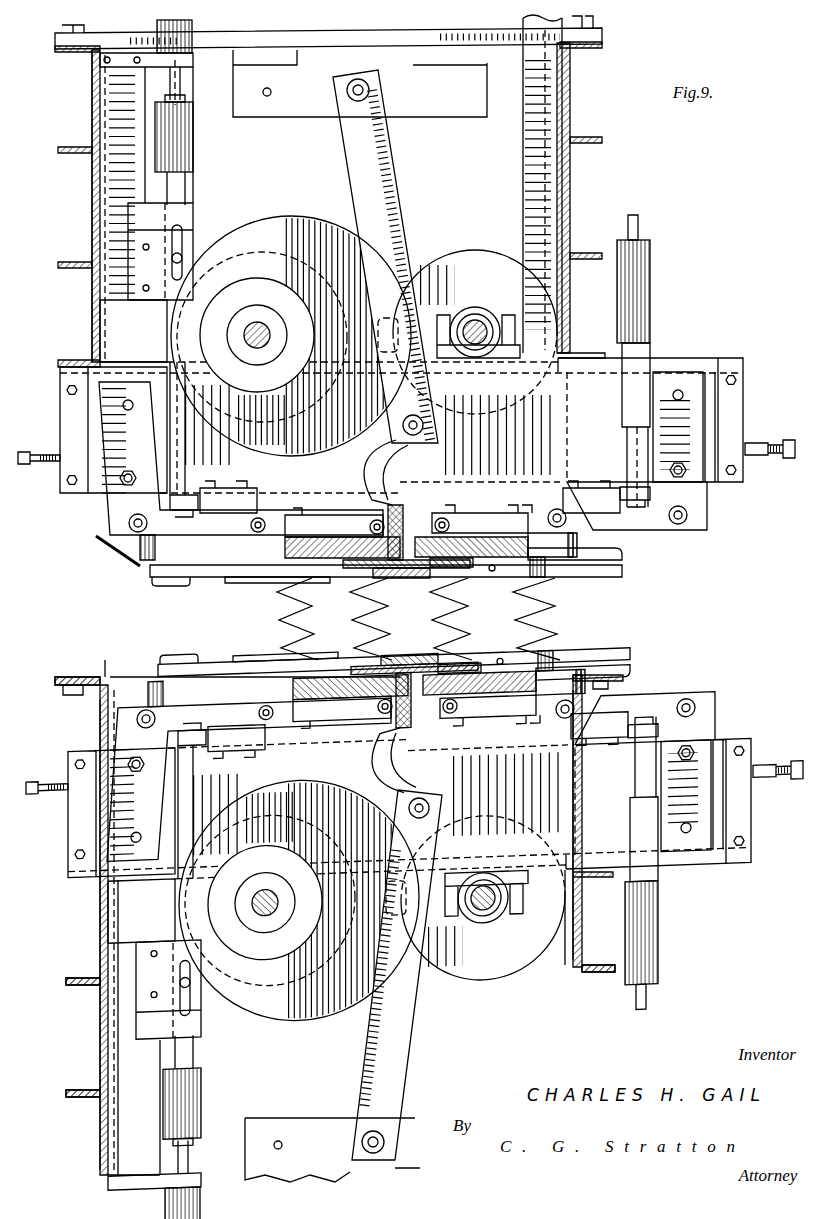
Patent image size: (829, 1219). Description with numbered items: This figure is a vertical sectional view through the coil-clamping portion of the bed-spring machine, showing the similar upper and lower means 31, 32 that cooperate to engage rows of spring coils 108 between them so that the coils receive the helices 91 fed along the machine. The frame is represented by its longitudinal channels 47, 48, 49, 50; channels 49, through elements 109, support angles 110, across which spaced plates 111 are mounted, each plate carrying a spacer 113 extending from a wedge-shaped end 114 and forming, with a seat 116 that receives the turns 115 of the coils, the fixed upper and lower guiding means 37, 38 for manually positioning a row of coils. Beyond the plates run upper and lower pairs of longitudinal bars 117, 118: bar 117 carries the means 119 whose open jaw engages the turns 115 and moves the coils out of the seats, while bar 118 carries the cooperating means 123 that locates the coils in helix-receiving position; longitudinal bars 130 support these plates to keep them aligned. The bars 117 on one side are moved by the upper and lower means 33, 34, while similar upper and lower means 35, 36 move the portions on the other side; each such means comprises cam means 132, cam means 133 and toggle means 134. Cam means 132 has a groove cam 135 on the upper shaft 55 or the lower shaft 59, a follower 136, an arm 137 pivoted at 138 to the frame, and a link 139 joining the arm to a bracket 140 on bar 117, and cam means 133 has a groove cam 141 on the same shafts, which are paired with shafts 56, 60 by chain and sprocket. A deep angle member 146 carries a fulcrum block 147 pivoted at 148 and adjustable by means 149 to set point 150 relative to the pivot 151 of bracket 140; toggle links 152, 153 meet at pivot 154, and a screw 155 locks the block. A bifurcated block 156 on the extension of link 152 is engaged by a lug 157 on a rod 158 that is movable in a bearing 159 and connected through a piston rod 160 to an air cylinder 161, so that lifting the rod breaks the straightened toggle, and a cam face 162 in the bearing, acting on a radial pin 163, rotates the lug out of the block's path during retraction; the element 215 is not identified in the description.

The upper coil-engaging means 31 is at (469, 497).
The lower coil-engaging means 32 is at (436, 732).
The upper moving means 33 is at (270, 214).
The lower moving means 34 is at (295, 1027).
The upper moving means 35 is at (673, 350).
The lower moving means 36 is at (676, 885).
The upper guiding means 37 is at (146, 590).
The lower guiding means 38 is at (149, 650).
The longitudinal channel 47 is at (75, 154).
The longitudinal channel 48 is at (78, 262).
The longitudinal channel 49 is at (92, 986).
The longitudinal channel 50 is at (92, 1090).
The upper shaft 55 is at (258, 322).
The upper shaft 56 is at (478, 308).
The lower shaft 59 is at (265, 920).
The lower shaft 60 is at (482, 918).
The helix 91 is at (495, 570).
The spring coils 108 is at (277, 611).
The supporting elements 109 is at (103, 908).
The angles 110 is at (100, 705).
The spaced plates 111 is at (578, 563).
The spacer 113 is at (233, 578).
The wedge-shaped end 114 is at (170, 587).
The coil turns 115 is at (257, 663).
The seat 116 is at (325, 584).
The longitudinal bar 117 is at (285, 551).
The longitudinal bar 118 is at (554, 615).
The coil-moving means 119 is at (378, 575).
The coil-locating means 123 is at (450, 568).
The longitudinal bars 130 is at (398, 505).
The cam means 132 is at (421, 230).
The cam means 133 is at (474, 243).
The toggle means 134 is at (275, 505).
The groove cam 135 is at (318, 232).
The follower 136 is at (415, 308).
The arm 137 is at (397, 178).
The pivot 138 is at (350, 98).
The link 139 is at (372, 470).
The bracket 140 is at (330, 515).
The groove cam 141 is at (487, 262).
The deep angle member 146 is at (700, 358).
The fulcrum block 147 is at (100, 418).
The pivot 148 is at (130, 400).
The adjusting means 149 is at (42, 465).
The toggle pivot point 150 is at (125, 538).
The bracket pivot 151 is at (370, 528).
The toggle link 152 is at (297, 509).
The toggle link 153 is at (168, 537).
The pivot 154 is at (252, 530).
The locking screw 155 is at (129, 471).
The bifurcated block 156 is at (230, 488).
The lug 157 is at (168, 505).
The rod 158 is at (186, 184).
The bearing 159 is at (160, 306).
The piston rod 160 is at (181, 88).
The air cylinder 161 is at (190, 48).
The cam face 162 is at (195, 222).
The radial pin 163 is at (183, 262).
The plate 215 is at (560, 664).